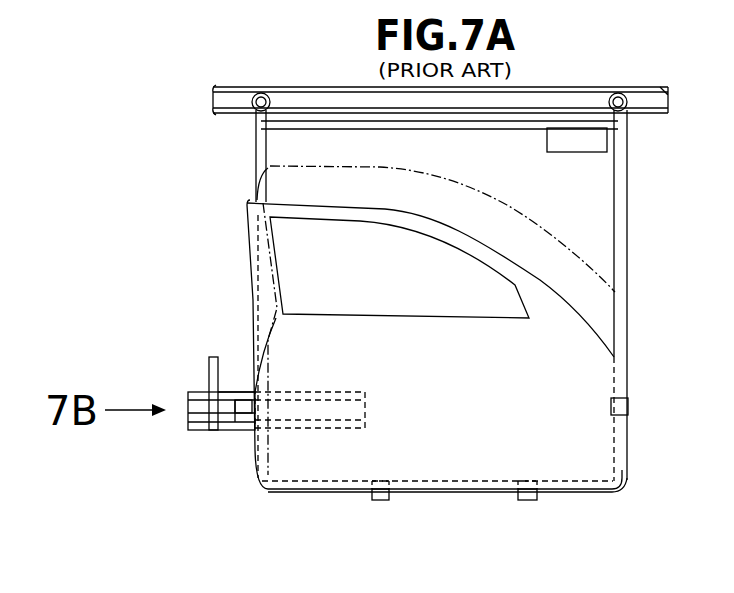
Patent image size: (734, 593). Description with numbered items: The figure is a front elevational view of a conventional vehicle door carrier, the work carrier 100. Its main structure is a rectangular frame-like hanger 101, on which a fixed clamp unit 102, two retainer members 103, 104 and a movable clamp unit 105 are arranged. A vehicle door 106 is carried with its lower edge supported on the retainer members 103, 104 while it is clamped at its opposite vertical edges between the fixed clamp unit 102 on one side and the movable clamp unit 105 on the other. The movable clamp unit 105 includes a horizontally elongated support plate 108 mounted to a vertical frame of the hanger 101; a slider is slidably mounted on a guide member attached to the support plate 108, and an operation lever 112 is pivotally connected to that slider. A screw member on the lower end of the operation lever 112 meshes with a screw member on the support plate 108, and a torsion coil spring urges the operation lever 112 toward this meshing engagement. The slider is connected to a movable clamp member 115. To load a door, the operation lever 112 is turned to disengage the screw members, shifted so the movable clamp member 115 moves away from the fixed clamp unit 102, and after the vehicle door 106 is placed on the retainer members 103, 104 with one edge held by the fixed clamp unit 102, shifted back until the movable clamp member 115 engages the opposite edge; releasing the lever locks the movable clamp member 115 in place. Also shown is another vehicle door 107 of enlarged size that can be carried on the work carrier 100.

The work carrier 100 is at (170, 211).
The hanger 101 is at (628, 237).
The fixed clamp unit 102 is at (630, 404).
The retainer member 103 is at (378, 503).
The retainer member 104 is at (528, 503).
The movable clamp unit 105 is at (216, 453).
The vehicle door 106 is at (248, 249).
The vehicle door of enlarged size 107 is at (308, 165).
The support plate 108 is at (238, 385).
The operation lever 112 is at (209, 367).
The movable clamp member 115 is at (247, 404).